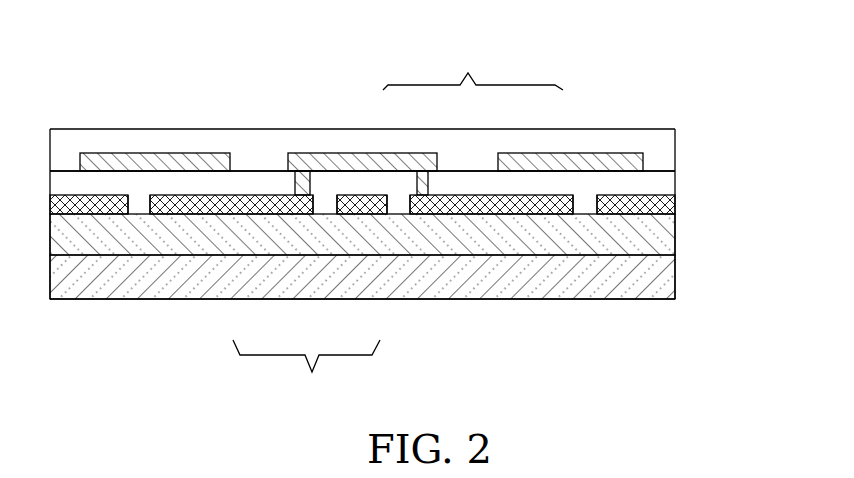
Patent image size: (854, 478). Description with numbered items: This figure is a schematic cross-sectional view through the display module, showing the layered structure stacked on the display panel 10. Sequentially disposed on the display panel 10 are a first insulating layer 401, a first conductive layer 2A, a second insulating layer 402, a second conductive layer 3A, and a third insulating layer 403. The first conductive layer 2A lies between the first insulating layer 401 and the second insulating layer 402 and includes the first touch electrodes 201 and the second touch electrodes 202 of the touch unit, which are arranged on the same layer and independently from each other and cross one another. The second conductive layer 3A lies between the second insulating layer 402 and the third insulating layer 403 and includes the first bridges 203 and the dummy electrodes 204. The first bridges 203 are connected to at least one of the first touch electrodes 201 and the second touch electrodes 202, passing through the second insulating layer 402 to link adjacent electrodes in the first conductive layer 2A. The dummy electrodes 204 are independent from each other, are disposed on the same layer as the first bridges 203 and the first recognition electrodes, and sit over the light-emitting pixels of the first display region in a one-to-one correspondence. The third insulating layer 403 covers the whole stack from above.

The display panel 10 is at (653, 282).
The first touch electrodes 201 is at (210, 208).
The second touch electrodes 202 is at (362, 208).
The first bridges 203 is at (363, 158).
The dummy electrodes 204 is at (153, 160).
The first insulating layer 401 is at (665, 235).
The second insulating layer 402 is at (653, 180).
The third insulating layer 403 is at (653, 140).
The first conductive layer 2A is at (306, 369).
The second conductive layer 3A is at (473, 73).